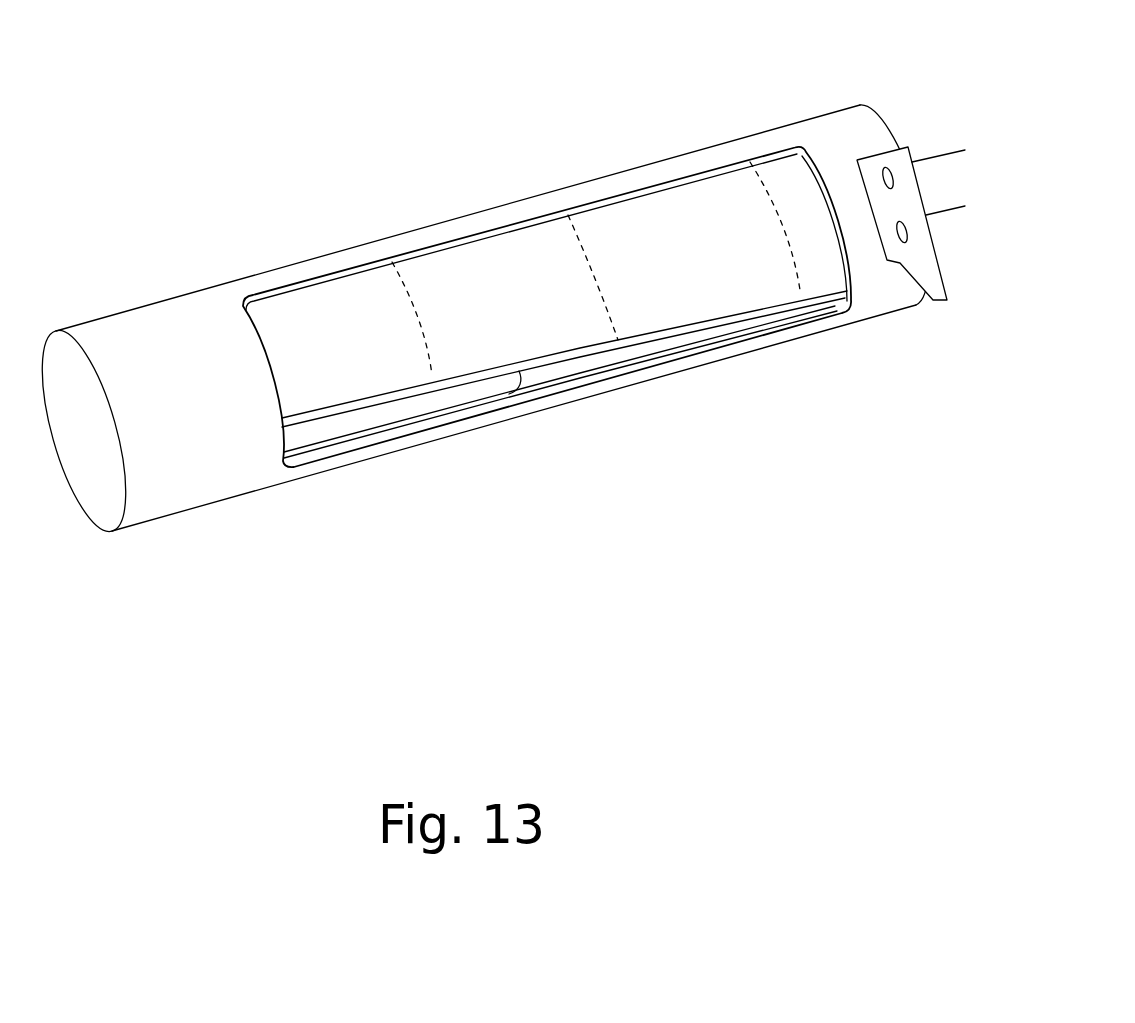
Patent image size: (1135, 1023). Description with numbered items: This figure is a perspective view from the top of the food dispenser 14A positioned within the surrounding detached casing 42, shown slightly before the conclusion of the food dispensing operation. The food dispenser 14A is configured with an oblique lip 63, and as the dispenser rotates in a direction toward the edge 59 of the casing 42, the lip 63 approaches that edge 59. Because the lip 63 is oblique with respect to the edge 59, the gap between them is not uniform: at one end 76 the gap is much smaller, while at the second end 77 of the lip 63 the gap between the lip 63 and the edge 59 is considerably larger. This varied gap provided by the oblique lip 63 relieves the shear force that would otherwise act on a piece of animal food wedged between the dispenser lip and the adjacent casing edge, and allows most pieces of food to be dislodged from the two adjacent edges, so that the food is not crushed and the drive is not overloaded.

The casing 42 is at (250, 282).
The second end of lip 77 is at (317, 406).
The end of lip 76 is at (825, 287).
The food dispenser 14A is at (608, 262).
The oblique lip 63 is at (541, 364).
The edge of casing 59 is at (537, 394).